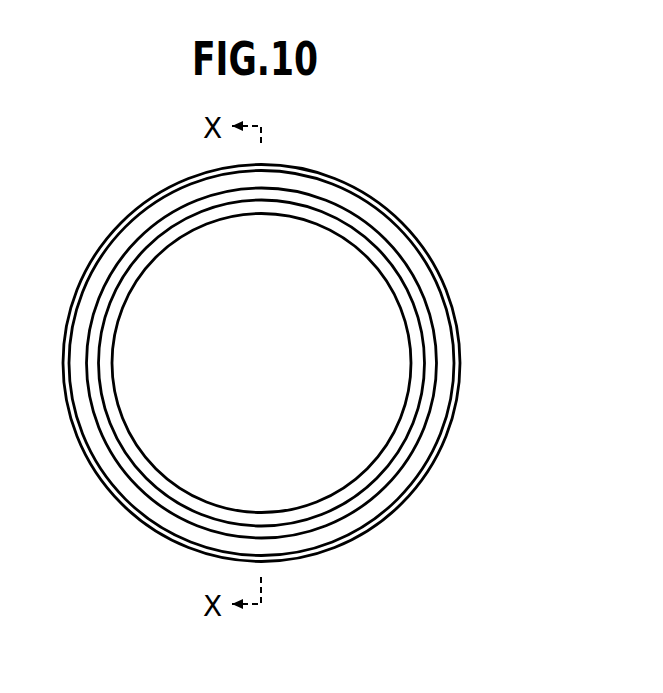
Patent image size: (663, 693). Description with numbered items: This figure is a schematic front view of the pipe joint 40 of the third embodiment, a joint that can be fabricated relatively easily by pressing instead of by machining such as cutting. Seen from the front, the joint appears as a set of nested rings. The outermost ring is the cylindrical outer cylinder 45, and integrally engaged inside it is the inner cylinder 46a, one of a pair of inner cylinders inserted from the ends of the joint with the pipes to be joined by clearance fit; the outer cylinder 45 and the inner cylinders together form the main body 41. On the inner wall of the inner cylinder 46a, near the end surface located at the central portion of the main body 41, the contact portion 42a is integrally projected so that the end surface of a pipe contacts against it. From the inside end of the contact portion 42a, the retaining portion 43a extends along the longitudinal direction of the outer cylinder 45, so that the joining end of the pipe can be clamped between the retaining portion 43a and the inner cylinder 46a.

The pipe joint 40 is at (303, 339).
The main body 41 is at (444, 457).
The outer cylinder 45 is at (410, 232).
The inner cylinder 46a is at (424, 277).
The contact portion 42a is at (423, 303).
The retaining portion 43a is at (420, 346).